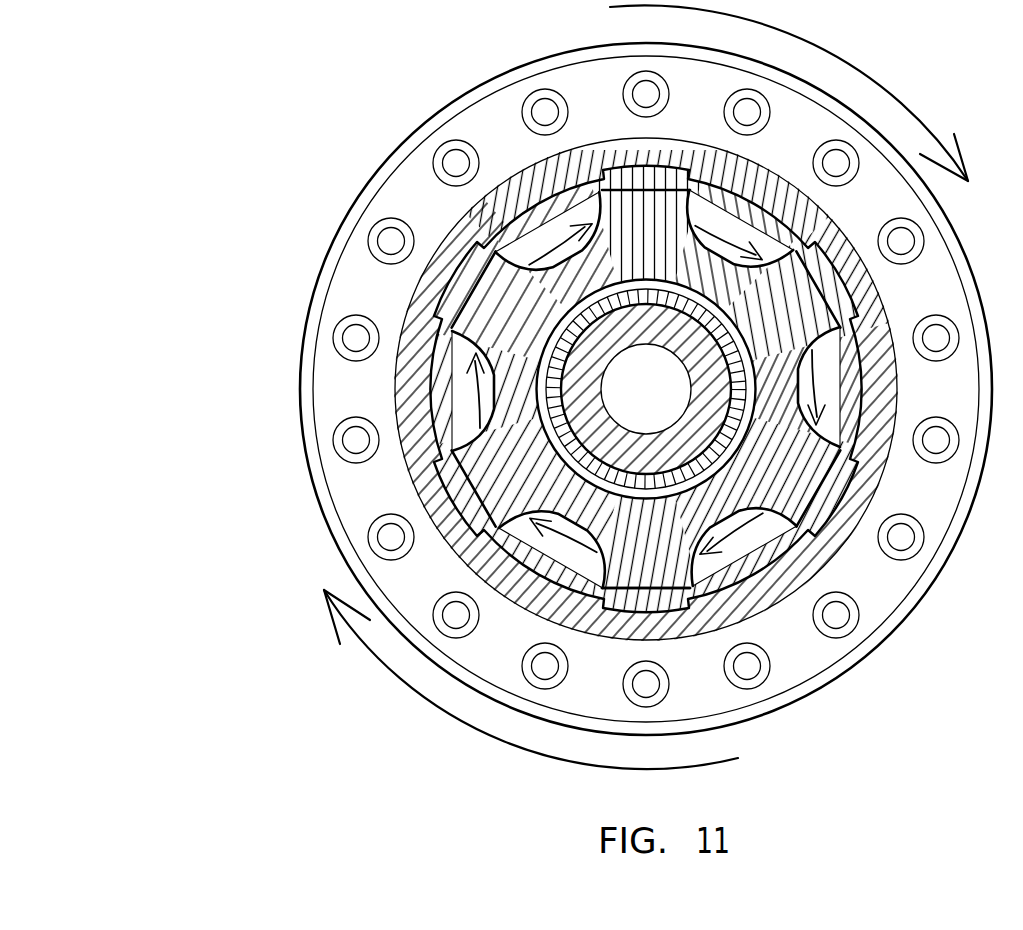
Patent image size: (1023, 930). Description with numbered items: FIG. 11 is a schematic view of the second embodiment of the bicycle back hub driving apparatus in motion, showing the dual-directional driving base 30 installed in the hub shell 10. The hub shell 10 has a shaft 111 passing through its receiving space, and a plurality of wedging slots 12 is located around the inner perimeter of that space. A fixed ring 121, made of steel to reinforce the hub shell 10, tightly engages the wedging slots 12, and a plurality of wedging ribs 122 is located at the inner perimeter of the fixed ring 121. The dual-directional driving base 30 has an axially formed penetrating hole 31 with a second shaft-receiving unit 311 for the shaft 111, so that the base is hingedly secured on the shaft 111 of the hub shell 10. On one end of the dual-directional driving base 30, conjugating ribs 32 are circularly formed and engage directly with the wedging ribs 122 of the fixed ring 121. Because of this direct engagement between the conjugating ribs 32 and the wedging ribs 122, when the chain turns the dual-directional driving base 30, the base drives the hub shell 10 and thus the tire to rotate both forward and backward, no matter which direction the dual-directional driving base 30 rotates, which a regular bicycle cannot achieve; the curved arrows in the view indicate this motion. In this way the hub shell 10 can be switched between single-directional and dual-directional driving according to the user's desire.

The hub shell 10 is at (815, 98).
The wedging slot 12 is at (492, 328).
The fixed ring 121 is at (492, 328).
The wedging ribs 122 is at (490, 360).
The conjugating ribs 32 is at (490, 360).
The shaft 111 is at (590, 398).
The penetrating hole 31 is at (535, 484).
The second shaft-receiving unit 311 is at (512, 545).
The dual-directional driving base 30 is at (630, 570).